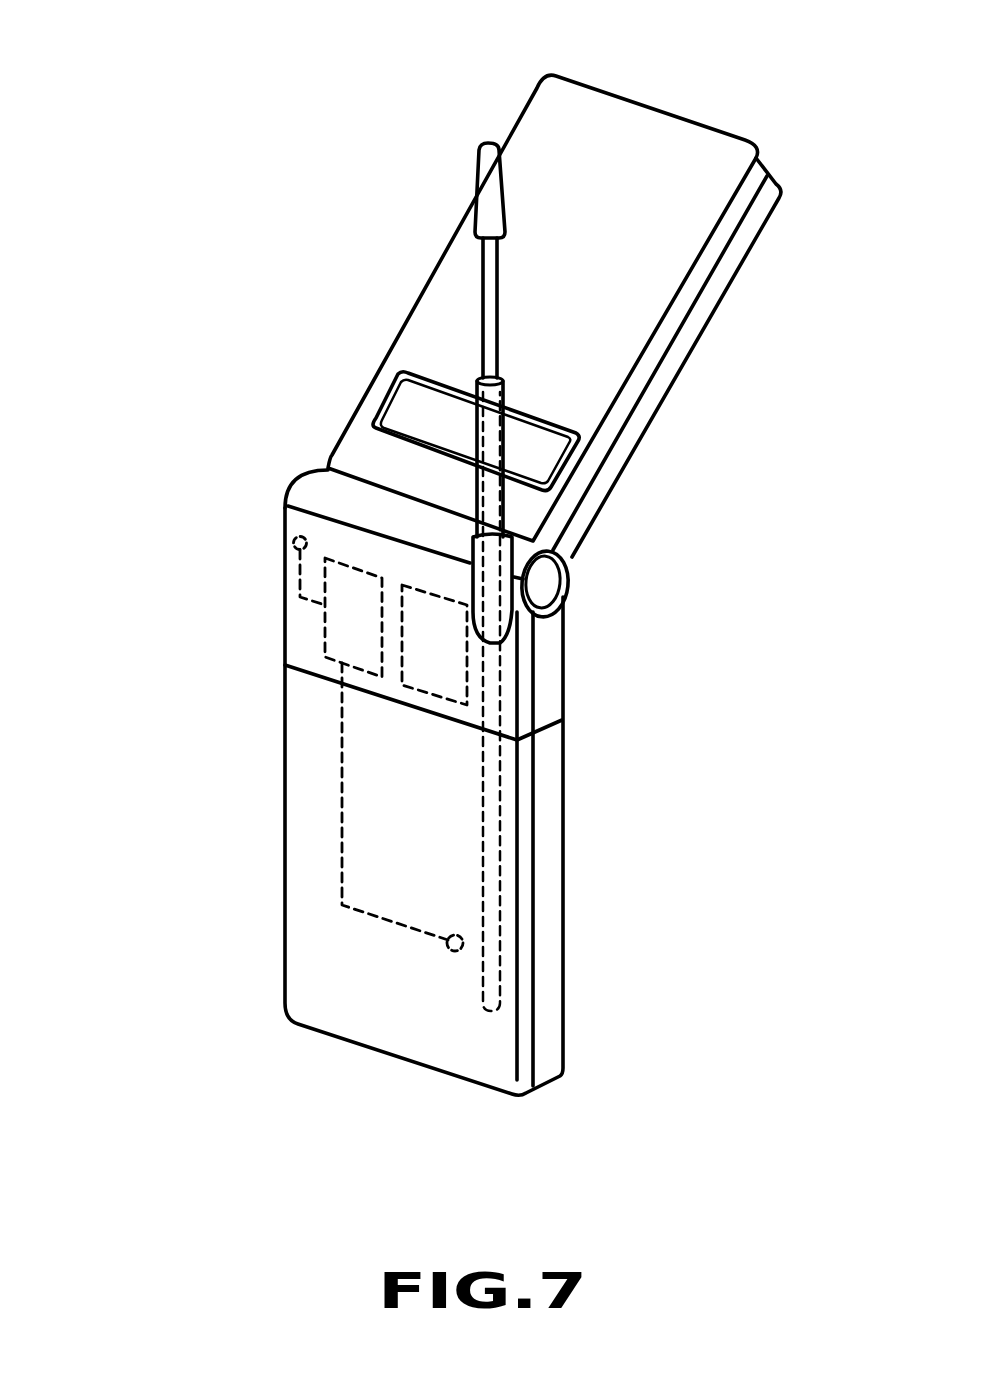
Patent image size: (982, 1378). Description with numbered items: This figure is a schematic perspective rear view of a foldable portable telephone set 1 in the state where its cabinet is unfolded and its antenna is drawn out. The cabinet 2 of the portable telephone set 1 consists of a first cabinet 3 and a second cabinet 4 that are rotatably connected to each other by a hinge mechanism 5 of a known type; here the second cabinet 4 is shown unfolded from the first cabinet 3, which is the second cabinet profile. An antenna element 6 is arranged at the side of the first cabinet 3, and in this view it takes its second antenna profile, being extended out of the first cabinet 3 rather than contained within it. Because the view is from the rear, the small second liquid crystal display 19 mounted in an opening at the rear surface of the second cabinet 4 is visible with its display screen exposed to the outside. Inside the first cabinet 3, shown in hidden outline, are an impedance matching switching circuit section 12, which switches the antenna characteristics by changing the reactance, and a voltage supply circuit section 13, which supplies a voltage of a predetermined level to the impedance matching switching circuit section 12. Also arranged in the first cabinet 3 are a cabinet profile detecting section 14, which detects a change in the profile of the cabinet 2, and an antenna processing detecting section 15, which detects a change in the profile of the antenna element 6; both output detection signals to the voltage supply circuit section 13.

The portable telephone set 1 is at (413, 49).
The cabinet 2 is at (140, 390).
The first cabinet 3 is at (310, 497).
The second cabinet 4 is at (357, 424).
The hinge mechanism 5 is at (547, 580).
The antenna element 6 is at (487, 265).
The impedance matching switching circuit section 12 is at (403, 657).
The voltage supply circuit section 13 is at (327, 615).
The cabinet profile detecting section 14 is at (293, 543).
The antenna processing detecting section 15 is at (453, 953).
The second liquid crystal display 19 is at (397, 412).